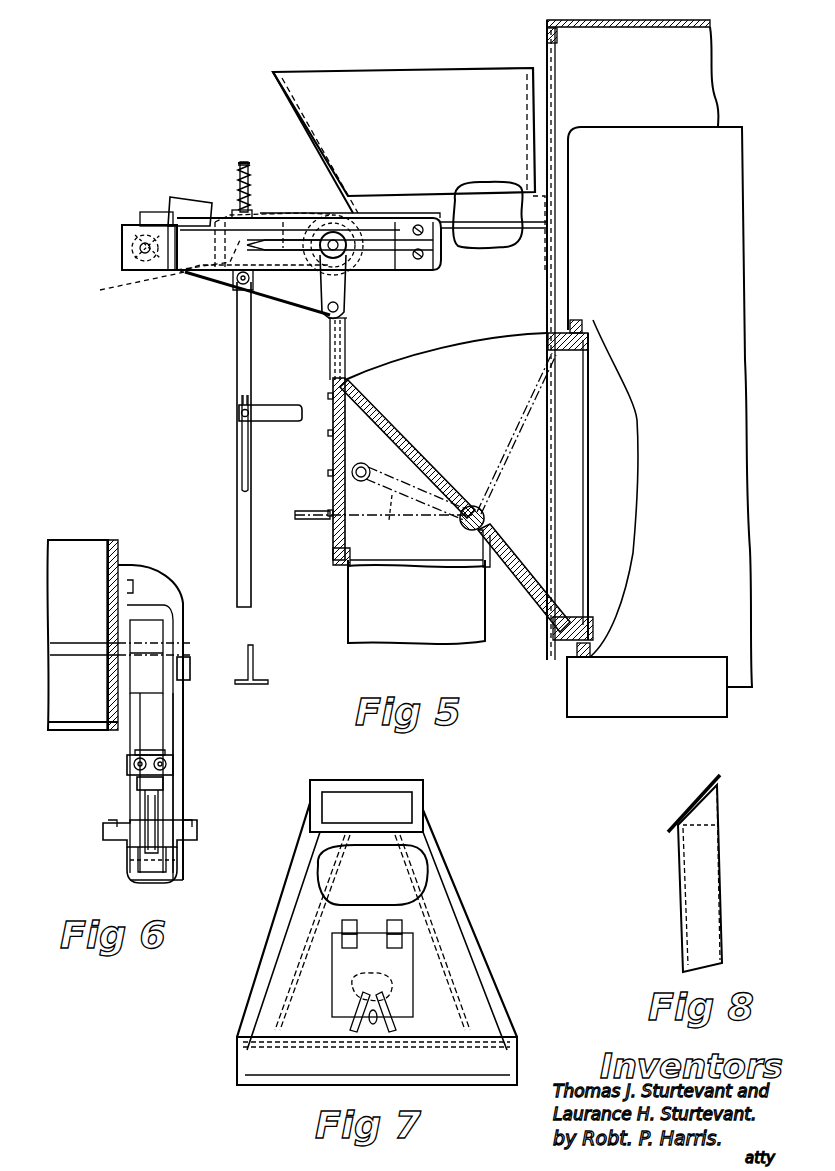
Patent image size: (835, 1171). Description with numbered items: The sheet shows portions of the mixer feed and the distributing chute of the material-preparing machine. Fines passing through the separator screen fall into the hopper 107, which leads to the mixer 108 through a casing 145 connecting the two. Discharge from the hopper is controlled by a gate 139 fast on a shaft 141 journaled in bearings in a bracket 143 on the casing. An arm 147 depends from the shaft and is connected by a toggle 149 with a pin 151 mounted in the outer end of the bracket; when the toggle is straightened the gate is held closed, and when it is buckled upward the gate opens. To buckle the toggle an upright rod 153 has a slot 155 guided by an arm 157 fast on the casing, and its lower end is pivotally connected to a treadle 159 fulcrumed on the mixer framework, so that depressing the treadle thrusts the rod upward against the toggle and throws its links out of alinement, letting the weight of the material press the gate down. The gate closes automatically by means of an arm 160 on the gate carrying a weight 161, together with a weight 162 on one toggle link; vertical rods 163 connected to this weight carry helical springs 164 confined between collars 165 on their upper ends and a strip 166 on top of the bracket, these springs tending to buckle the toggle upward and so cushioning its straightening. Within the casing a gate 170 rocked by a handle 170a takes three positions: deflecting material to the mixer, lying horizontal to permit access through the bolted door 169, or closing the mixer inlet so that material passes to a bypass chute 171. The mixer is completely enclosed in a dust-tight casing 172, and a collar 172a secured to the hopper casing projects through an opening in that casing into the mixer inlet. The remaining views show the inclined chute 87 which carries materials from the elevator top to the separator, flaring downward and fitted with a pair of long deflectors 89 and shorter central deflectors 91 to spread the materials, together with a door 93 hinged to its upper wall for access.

In FIG. 7, the chute 87 is at (290, 877).
In FIG. 8, the chute 87 is at (680, 882).
In FIG. 7, the long deflectors 89 is at (398, 873).
In FIG. 8, the long deflectors 89 is at (680, 851).
In FIG. 7, the central deflectors 91 is at (373, 994).
In FIG. 7, the door 93 is at (335, 995).
In FIG. 5, the hopper 107 is at (290, 78).
In FIG. 6, the hopper 107 is at (110, 540).
In FIG. 5, the mixer 108 is at (640, 127).
In FIG. 5, the gate 139 is at (482, 222).
In FIG. 5, the shaft 141 is at (343, 252).
In FIG. 6, the shaft 141 is at (180, 660).
In FIG. 5, the bracket 143 is at (285, 265).
In FIG. 6, the bracket 143 is at (183, 715).
In FIG. 5, the casing 145 is at (352, 333).
In FIG. 6, the casing 145 is at (122, 560).
In FIG. 5, the arm 147 is at (345, 300).
In FIG. 6, the arm 147 is at (150, 657).
In FIG. 5, the toggle 149 is at (205, 280).
In FIG. 6, the toggle 149 is at (165, 815).
In FIG. 5, the pin 151 is at (140, 248).
In FIG. 6, the pin 151 is at (178, 862).
In FIG. 5, the upright rod 153 is at (240, 345).
In FIG. 5, the slot 155 is at (244, 462).
In FIG. 5, the arm 157 is at (276, 405).
In FIG. 5, the treadle 159 is at (254, 678).
In FIG. 5, the arm 160 is at (145, 213).
In FIG. 5, the cam block 161 is at (180, 200).
In FIG. 5, the weight 162 is at (162, 272).
In FIG. 6, the weight 162 is at (163, 782).
In FIG. 5, the vertical rods 163 is at (245, 213).
In FIG. 5, the helical springs 164 is at (252, 187).
In FIG. 5, the collars 165 is at (246, 168).
In FIG. 6, the collars 165 is at (168, 765).
In FIG. 5, the strip 166 is at (235, 210).
In FIG. 6, the strip 166 is at (127, 765).
In FIG. 5, the door 169 is at (333, 458).
In FIG. 5, the gate 170 is at (382, 425).
In FIG. 5, the handle 170a is at (385, 501).
In FIG. 5, the bypass chute 171 is at (348, 608).
In FIG. 5, the dust-tight casing 172 is at (545, 45).
In FIG. 5, the collar 172a is at (570, 462).